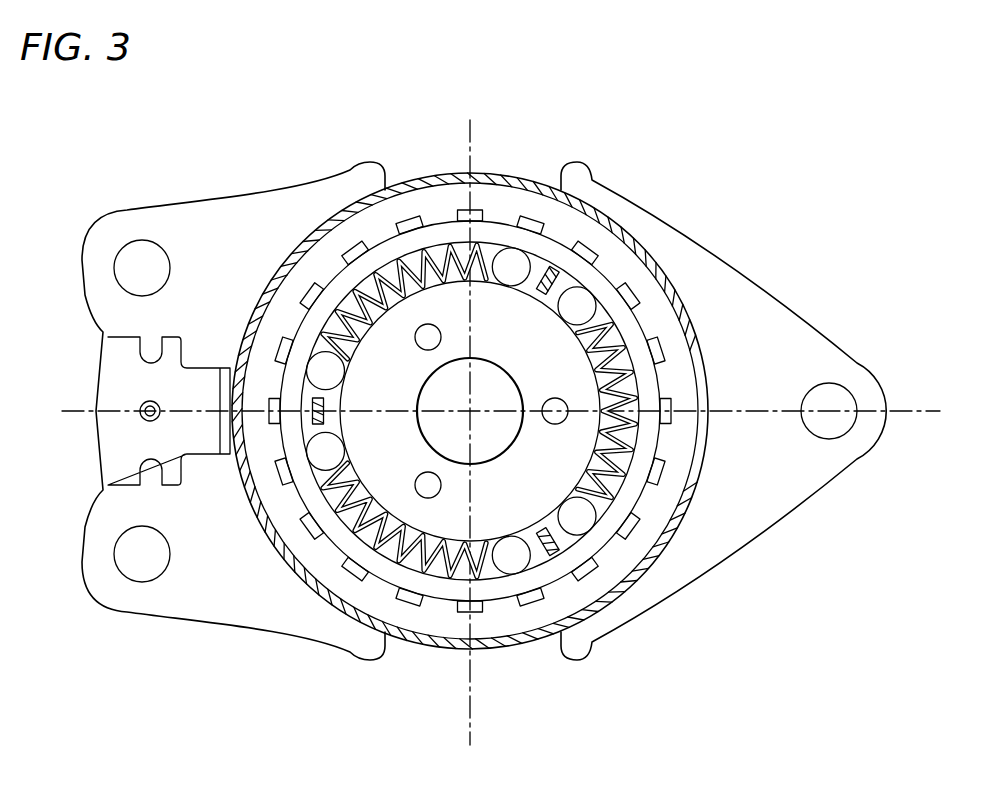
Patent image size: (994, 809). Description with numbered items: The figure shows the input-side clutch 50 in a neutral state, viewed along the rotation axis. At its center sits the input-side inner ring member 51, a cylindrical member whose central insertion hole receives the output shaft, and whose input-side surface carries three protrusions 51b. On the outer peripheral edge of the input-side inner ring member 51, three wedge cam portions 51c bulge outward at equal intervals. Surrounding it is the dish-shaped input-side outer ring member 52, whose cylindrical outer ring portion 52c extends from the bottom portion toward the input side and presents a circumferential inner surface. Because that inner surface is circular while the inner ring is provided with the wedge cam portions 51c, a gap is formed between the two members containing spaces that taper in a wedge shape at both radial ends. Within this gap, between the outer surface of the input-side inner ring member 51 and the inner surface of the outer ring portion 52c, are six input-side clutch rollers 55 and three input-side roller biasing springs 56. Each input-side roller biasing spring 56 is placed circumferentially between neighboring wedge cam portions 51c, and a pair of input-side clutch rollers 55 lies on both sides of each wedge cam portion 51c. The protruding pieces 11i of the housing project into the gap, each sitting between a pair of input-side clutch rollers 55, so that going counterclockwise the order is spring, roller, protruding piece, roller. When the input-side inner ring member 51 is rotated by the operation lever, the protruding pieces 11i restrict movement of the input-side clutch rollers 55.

The input-side clutch 50 is at (333, 204).
The input-side inner ring member 51 is at (560, 350).
The protrusions 51b is at (437, 327).
The wedge cam portions 51c is at (556, 272).
The input-side outer ring member 52 is at (655, 345).
The outer ring portion 52c is at (521, 592).
The input-side clutch rollers 55 is at (314, 460).
The input-side roller biasing springs 56 is at (430, 256).
The protruding pieces 11i is at (556, 552).